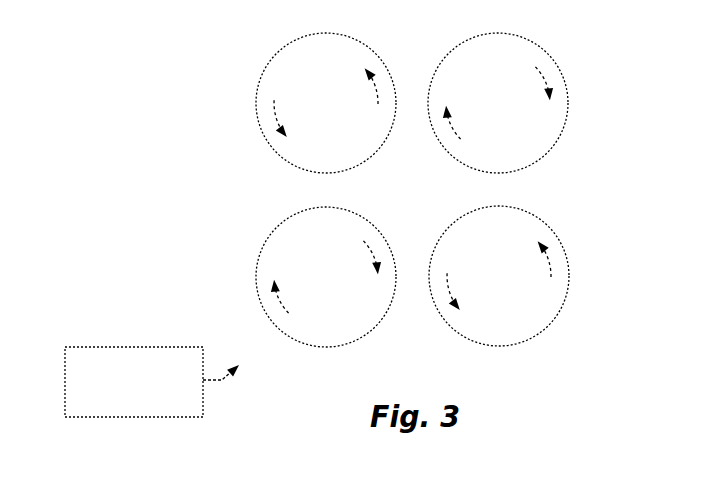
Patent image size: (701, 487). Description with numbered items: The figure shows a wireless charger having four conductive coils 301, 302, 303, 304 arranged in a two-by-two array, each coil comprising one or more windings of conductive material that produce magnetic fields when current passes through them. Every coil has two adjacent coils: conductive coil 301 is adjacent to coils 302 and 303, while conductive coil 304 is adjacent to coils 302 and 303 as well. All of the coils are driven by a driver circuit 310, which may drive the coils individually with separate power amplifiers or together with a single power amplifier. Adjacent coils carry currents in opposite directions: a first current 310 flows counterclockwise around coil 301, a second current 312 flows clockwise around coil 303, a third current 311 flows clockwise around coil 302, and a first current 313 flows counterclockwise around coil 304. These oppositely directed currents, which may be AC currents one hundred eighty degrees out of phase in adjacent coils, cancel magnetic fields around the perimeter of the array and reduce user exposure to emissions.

The conductive coil 301 is at (268, 58).
The conductive coil 302 is at (257, 278).
The conductive coil 303 is at (553, 58).
The conductive coil 304 is at (568, 276).
The driver circuit 310 is at (86, 347).
The third current 311 is at (280, 311).
The second current 312 is at (455, 136).
The first current 313 is at (447, 294).